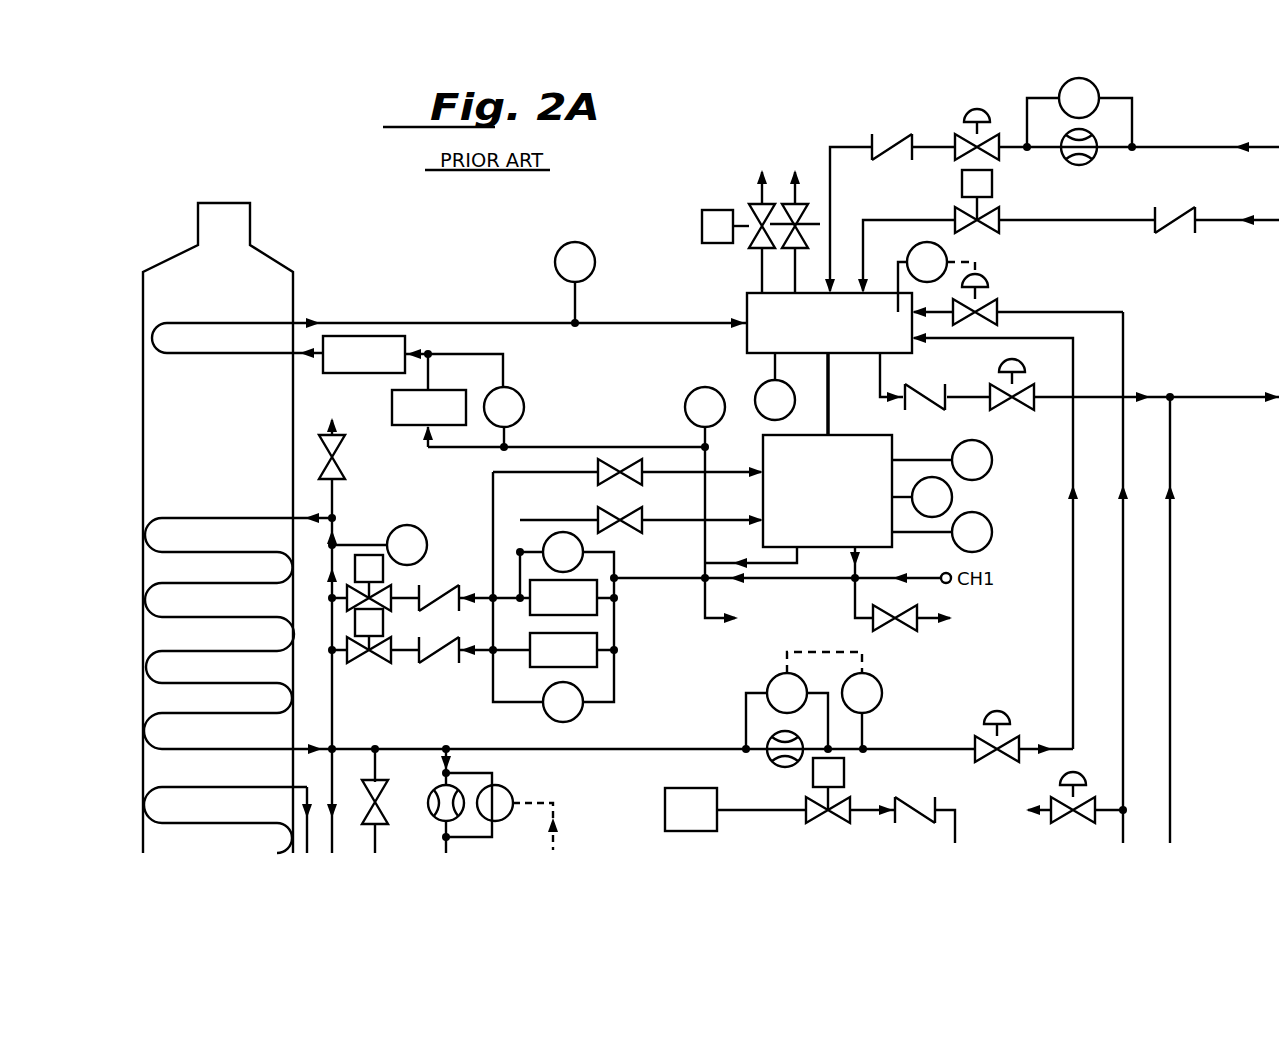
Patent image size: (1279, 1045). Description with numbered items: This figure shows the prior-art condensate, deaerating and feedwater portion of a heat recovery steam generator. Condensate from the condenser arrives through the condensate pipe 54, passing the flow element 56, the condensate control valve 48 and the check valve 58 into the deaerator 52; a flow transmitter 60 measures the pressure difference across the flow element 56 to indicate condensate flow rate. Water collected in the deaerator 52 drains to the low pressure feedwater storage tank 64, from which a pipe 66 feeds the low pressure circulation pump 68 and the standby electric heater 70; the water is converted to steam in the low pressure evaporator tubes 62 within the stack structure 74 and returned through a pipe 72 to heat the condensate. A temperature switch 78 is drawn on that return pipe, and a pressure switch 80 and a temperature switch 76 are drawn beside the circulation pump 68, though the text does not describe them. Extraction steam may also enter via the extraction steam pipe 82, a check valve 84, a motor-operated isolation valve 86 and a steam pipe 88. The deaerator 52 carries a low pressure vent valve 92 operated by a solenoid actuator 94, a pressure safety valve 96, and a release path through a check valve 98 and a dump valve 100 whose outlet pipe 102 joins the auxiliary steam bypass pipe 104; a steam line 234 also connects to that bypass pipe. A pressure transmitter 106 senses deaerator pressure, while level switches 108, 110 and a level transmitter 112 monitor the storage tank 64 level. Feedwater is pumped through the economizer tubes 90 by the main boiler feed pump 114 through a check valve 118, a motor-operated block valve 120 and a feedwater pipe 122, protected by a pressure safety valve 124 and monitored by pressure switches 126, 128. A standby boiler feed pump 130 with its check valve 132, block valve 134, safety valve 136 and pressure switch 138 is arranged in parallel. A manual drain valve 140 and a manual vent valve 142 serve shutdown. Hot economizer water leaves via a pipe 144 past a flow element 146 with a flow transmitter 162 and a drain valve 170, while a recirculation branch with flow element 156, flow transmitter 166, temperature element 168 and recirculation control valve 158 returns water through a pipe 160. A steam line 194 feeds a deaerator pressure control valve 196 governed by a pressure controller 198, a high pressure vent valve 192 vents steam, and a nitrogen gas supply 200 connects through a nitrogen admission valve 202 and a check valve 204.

The condensate control valve 48 is at (968, 112).
The deaerator 52 is at (745, 303).
The condensate pipe 54 is at (1220, 145).
The flow element 56 is at (1076, 166).
The check valve 58 is at (893, 135).
The flow transmitter 60 is at (1100, 96).
The low pressure evaporator tubes 62 is at (240, 355).
The low pressure feedwater storage tank 64 is at (893, 445).
The pipe 66 is at (752, 572).
The low pressure circulation pump 68 is at (400, 430).
The standby electric heater 70 is at (408, 350).
The pipe 72 is at (668, 320).
The stack structure 74 is at (198, 225).
The temperature switch 76 is at (686, 402).
The temperature switch 78 is at (562, 250).
The pressure switch 80 is at (522, 408).
The extraction steam pipe 82 is at (1230, 222).
The check valve 84 is at (1176, 212).
The motor-operated isolation valve 86 is at (966, 208).
The steam pipe 88 is at (903, 218).
The economizer tubes 90 is at (249, 752).
The low pressure vent valve 92 is at (752, 210).
The actuator 94 is at (700, 222).
The pressure safety valve 96 is at (802, 244).
The check valve 98 is at (926, 388).
The dump valve 100 is at (1018, 392).
The pipe 102 is at (1093, 397).
The auxiliary steam bypass pipe 104 is at (1222, 397).
The pressure transmitter 106 is at (757, 388).
The level switch 108 is at (990, 455).
The level switch 110 is at (951, 497).
The level transmitter 112 is at (990, 528).
The main boiler feed pump 114 is at (597, 592).
The check valve 118 is at (441, 590).
The motor operated block valve 120 is at (386, 590).
The feedwater pipe 122 is at (331, 597).
The pressure safety valve 124 is at (641, 530).
The pressure switch 126 is at (551, 534).
The pressure switch 128 is at (415, 525).
The standby boiler feed pump 130 is at (597, 640).
The check valve 132 is at (440, 665).
The motor-operated block valve 134 is at (372, 665).
The pressure safety valve 136 is at (603, 478).
The pressure switch 138 is at (578, 712).
The drain valve 140 is at (905, 632).
The vent valve 142 is at (343, 466).
The pipe 144 is at (358, 749).
The flow element 146 is at (430, 810).
The flow element 156 is at (772, 760).
The recirculation control valve 158 is at (1005, 722).
The pipe 160 is at (1062, 638).
The flow transmitter 162 is at (513, 792).
The flow transmitter 166 is at (771, 683).
The temperature element 168 is at (882, 696).
The drain valve 170 is at (381, 790).
The high pressure vent valve 192 is at (1056, 800).
The steam line 194 is at (1105, 577).
The deaerator pressure control valve 196 is at (996, 300).
The pressure controller 198 is at (950, 255).
The nitrogen gas supply 200 is at (663, 803).
The nitrogen admission valve 202 is at (810, 820).
The check valve 204 is at (921, 800).
The steam line 234 is at (1194, 620).